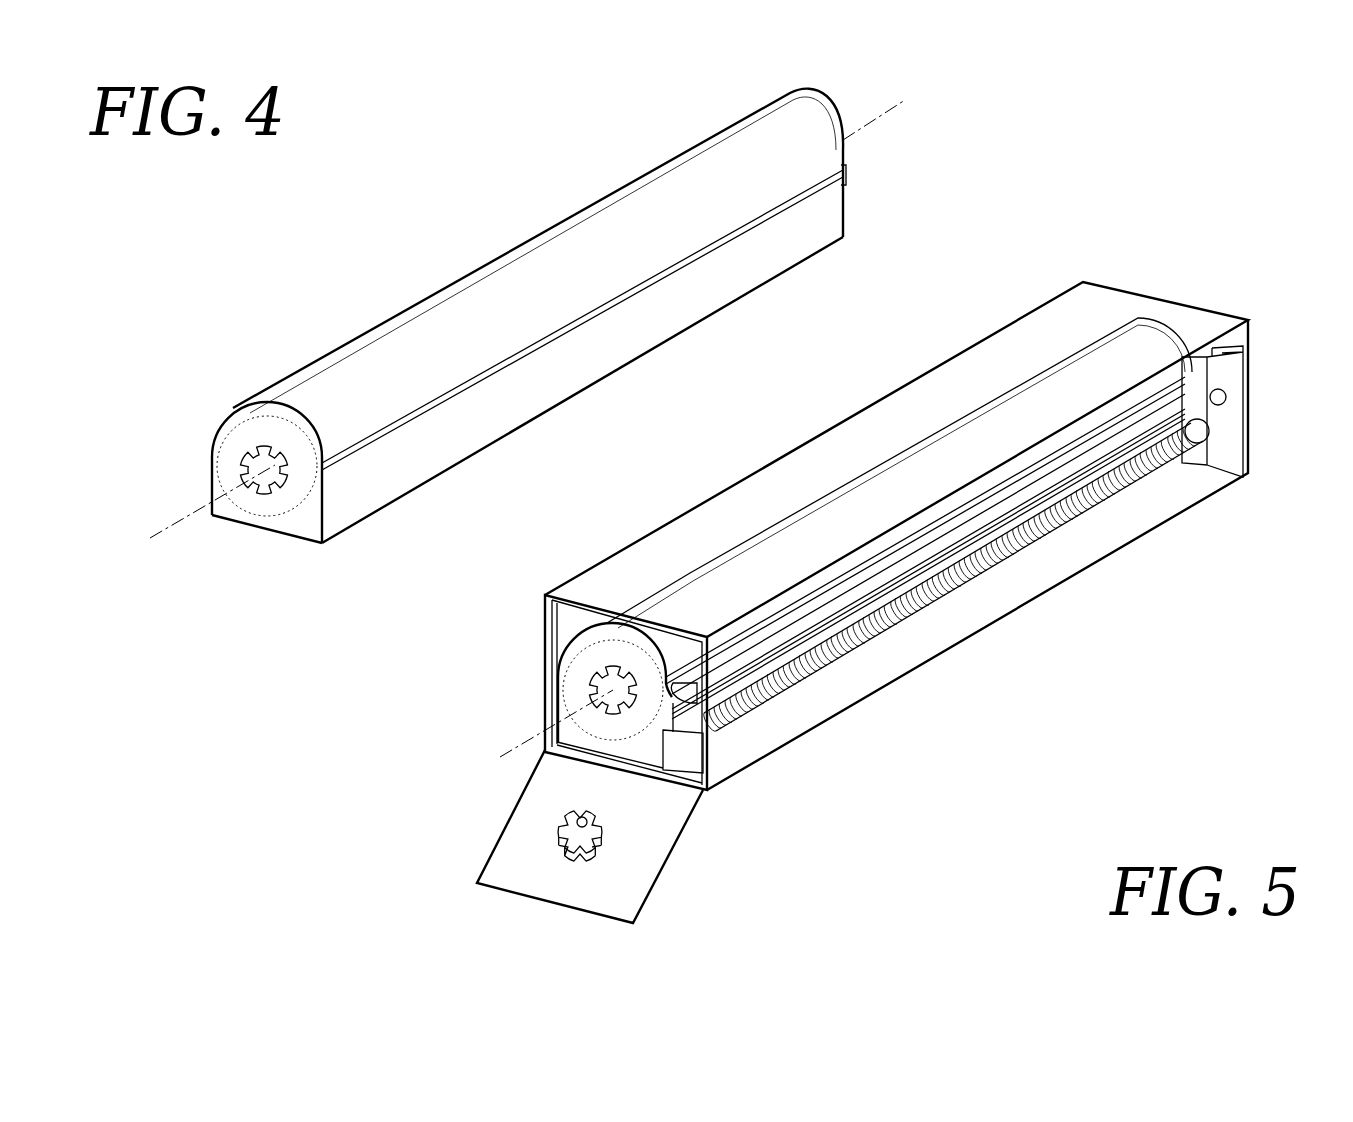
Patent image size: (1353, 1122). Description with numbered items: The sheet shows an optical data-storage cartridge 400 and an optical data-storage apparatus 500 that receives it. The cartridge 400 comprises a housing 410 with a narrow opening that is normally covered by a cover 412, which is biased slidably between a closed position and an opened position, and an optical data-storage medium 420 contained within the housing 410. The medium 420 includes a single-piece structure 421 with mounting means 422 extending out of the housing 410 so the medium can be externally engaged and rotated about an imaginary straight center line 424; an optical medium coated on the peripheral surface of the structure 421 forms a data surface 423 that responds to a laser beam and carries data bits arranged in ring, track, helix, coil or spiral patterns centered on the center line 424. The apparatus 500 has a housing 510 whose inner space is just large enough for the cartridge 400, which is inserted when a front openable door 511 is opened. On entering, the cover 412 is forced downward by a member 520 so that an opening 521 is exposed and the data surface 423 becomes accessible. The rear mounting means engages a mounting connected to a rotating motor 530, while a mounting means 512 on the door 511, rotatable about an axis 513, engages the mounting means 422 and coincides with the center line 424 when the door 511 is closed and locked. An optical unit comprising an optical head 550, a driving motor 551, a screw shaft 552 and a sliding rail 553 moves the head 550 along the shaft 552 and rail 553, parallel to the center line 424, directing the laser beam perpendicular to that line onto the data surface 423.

In FIG. 4, the optical data-storage cartridge 400 is at (325, 272).
In FIG. 4, the housing 410 is at (693, 143).
In FIG. 4, the cover 412 is at (848, 168).
In FIG. 5, the cover 412 is at (797, 650).
In FIG. 4, the optical data-storage medium 420 is at (303, 528).
In FIG. 4, the single-piece structure 421 is at (257, 418).
In FIG. 5, the single-piece structure 421 is at (615, 683).
In FIG. 4, the mounting means 422 is at (248, 445).
In FIG. 5, the mounting means 422 is at (592, 688).
In FIG. 4, the data surface 423 is at (527, 250).
In FIG. 5, the data surface 423 is at (900, 470).
In FIG. 4, the imaginary straight center line 424 is at (536, 318).
In FIG. 5, the imaginary straight center line 424 is at (527, 741).
In FIG. 5, the optical data-storage apparatus 500 is at (1115, 706).
In FIG. 5, the housing 510 is at (1000, 330).
In FIG. 5, the front openable door 511 is at (663, 873).
In FIG. 5, the mounting means 512 is at (557, 847).
In FIG. 5, the axis 513 is at (582, 818).
In FIG. 5, the member 520 is at (712, 698).
In FIG. 5, the opening 521 is at (837, 603).
In FIG. 5, the rotating motor 530 is at (1190, 362).
In FIG. 5, the optical head 550 is at (1223, 400).
In FIG. 5, the driving motor 551 is at (1223, 422).
In FIG. 5, the screw shaft 552 is at (1067, 530).
In FIG. 5, the sliding rail 553 is at (1127, 420).